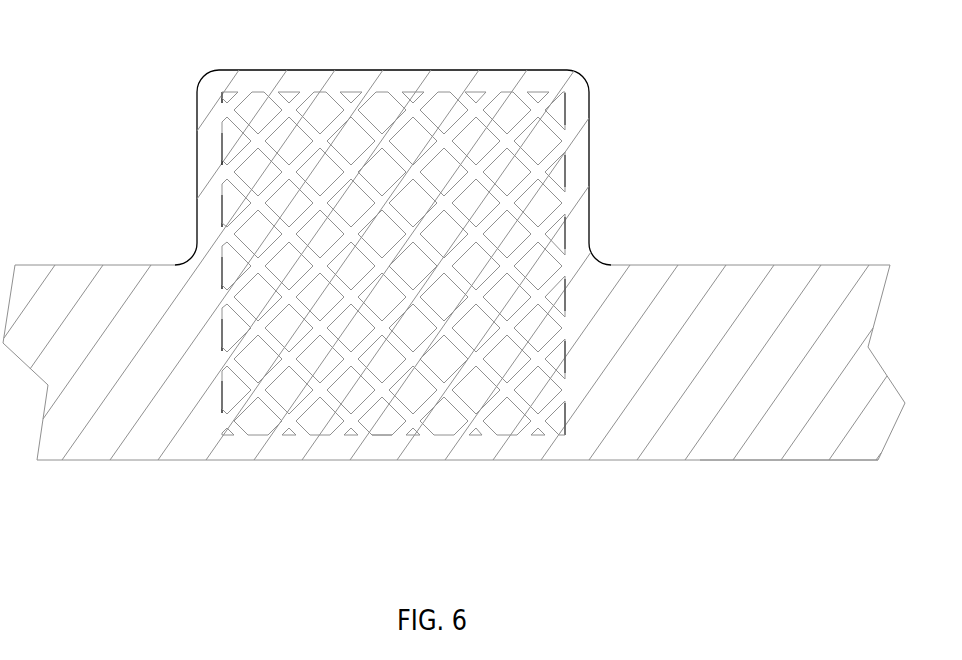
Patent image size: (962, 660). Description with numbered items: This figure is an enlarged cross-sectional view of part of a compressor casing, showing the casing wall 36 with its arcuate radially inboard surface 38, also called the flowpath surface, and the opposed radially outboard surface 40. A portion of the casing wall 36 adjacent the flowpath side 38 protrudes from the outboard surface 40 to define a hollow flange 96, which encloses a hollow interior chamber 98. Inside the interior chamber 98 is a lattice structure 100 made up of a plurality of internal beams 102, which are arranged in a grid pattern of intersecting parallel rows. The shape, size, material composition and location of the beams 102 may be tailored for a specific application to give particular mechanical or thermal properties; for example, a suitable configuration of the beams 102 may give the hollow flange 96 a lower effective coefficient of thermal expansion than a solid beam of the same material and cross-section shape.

The hollow flange 96 is at (467, 78).
The hollow interior chamber 98 is at (549, 156).
The lattice structure 100 is at (228, 178).
The internal beams 102 is at (353, 387).
The radially outboard surface 40 is at (697, 265).
The casing wall 36 is at (660, 452).
The radially inboard surface 38 is at (752, 460).